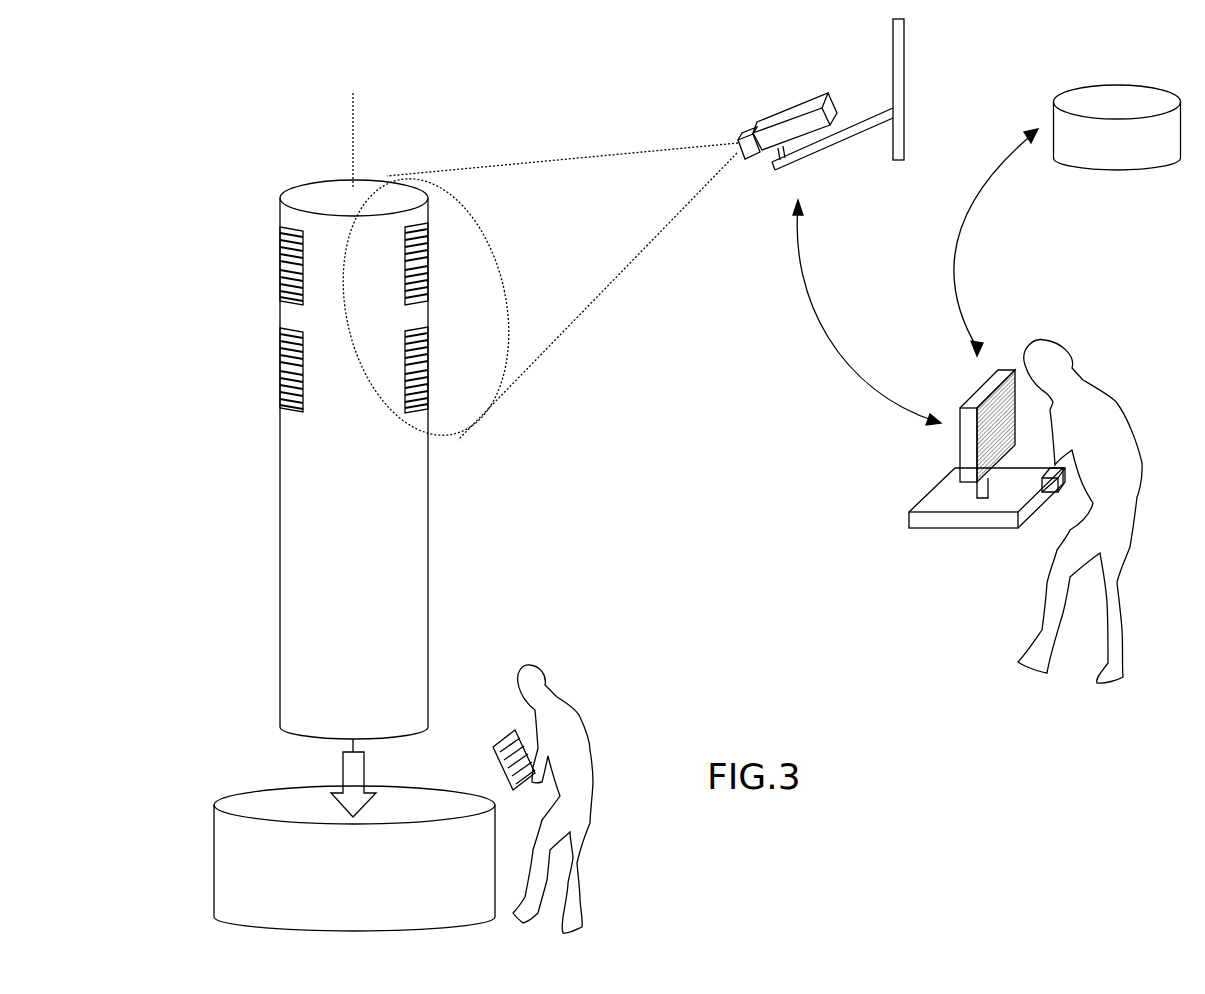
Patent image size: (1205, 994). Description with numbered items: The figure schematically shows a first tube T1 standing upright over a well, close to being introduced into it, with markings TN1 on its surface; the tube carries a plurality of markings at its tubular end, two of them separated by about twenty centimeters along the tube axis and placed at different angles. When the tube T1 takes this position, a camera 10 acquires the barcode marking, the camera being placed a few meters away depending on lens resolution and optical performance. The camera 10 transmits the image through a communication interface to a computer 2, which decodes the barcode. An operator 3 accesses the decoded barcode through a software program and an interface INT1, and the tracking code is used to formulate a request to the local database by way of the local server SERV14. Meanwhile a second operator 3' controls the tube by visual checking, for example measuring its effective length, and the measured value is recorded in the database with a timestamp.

The first tube T1 is at (409, 557).
The tags (barcode labels) TN1 is at (277, 370).
The camera 10 is at (775, 132).
The computer 2 is at (958, 539).
The interface (monitor) INT1 is at (1007, 367).
The local server SERV14 is at (1135, 158).
The operator 3 is at (1080, 512).
The second operator 3' is at (560, 799).